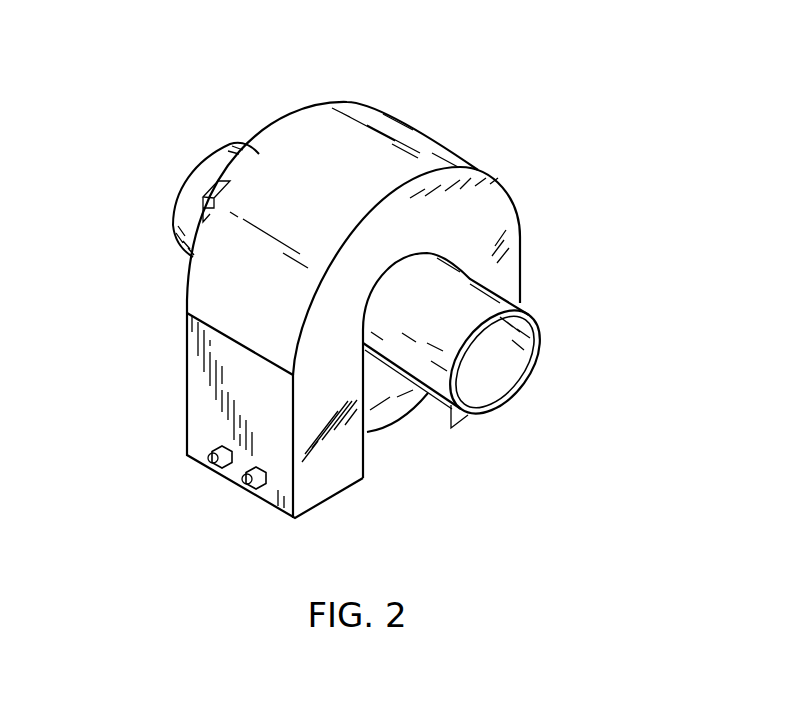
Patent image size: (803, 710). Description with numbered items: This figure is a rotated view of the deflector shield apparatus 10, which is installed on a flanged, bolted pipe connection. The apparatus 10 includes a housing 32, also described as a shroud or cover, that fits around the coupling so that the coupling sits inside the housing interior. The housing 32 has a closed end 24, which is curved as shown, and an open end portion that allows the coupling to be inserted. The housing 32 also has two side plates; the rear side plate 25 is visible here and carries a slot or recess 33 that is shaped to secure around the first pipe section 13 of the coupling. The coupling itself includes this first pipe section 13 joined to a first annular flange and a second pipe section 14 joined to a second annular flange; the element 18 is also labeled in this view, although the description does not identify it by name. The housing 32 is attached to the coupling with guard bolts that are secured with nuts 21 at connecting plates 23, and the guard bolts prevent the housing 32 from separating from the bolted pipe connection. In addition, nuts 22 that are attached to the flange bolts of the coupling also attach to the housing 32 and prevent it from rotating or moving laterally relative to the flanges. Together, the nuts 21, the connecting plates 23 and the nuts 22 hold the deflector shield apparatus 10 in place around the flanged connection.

The deflector shield apparatus 10 is at (552, 85).
The first pipe section 13 is at (493, 410).
The second pipe section 14 is at (188, 195).
The inlet tube 18 is at (212, 152).
The nuts 21 is at (227, 467).
The nuts 22 is at (210, 185).
The connecting plates 23 is at (200, 393).
The closed end 24 is at (320, 148).
The rear side plate 25 is at (342, 477).
The housing 32 is at (227, 278).
The slot or recess 33 is at (385, 276).